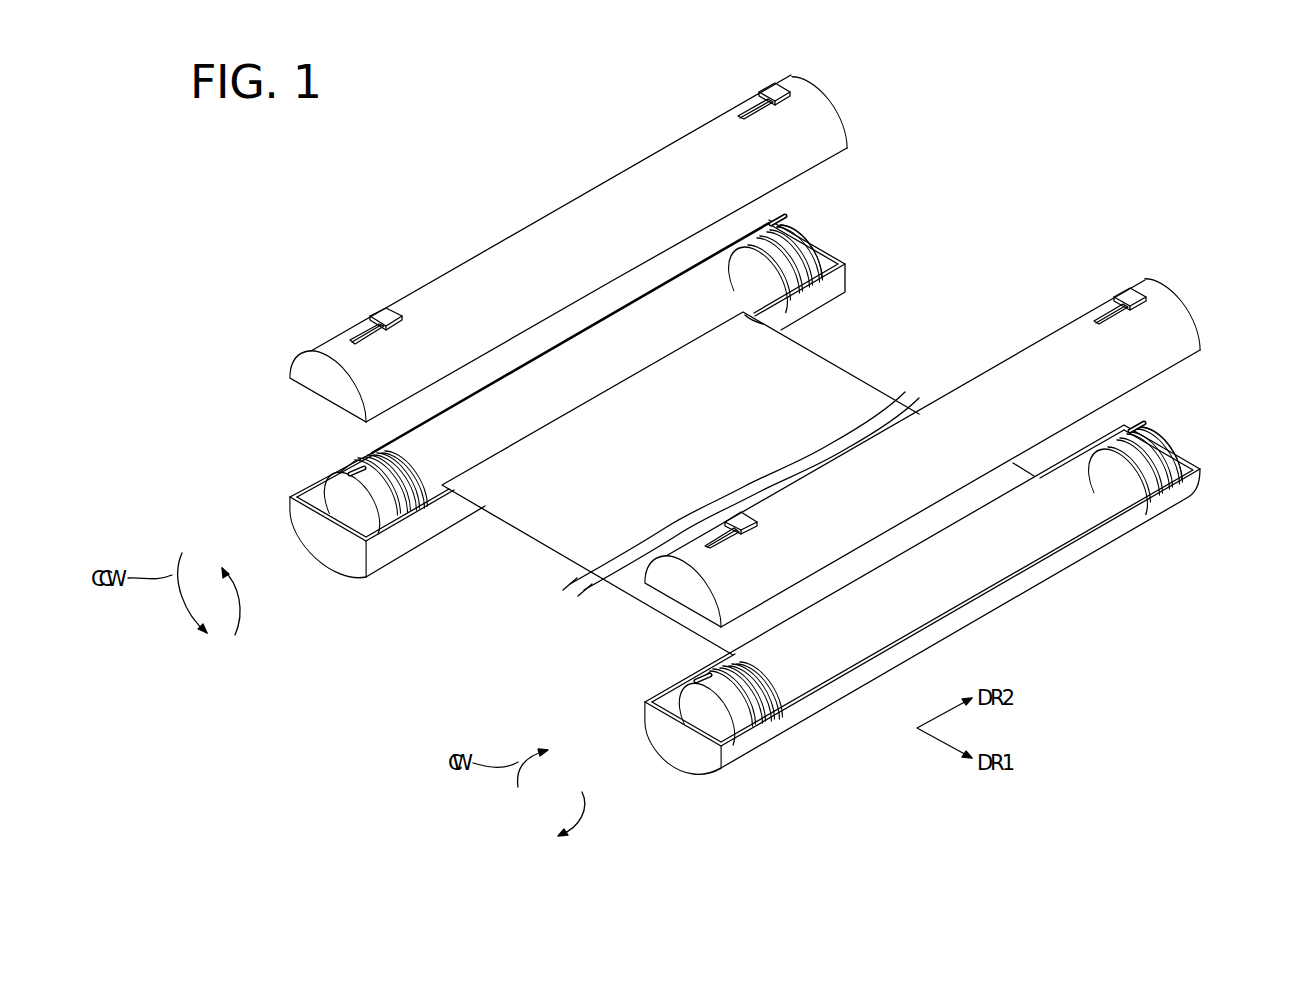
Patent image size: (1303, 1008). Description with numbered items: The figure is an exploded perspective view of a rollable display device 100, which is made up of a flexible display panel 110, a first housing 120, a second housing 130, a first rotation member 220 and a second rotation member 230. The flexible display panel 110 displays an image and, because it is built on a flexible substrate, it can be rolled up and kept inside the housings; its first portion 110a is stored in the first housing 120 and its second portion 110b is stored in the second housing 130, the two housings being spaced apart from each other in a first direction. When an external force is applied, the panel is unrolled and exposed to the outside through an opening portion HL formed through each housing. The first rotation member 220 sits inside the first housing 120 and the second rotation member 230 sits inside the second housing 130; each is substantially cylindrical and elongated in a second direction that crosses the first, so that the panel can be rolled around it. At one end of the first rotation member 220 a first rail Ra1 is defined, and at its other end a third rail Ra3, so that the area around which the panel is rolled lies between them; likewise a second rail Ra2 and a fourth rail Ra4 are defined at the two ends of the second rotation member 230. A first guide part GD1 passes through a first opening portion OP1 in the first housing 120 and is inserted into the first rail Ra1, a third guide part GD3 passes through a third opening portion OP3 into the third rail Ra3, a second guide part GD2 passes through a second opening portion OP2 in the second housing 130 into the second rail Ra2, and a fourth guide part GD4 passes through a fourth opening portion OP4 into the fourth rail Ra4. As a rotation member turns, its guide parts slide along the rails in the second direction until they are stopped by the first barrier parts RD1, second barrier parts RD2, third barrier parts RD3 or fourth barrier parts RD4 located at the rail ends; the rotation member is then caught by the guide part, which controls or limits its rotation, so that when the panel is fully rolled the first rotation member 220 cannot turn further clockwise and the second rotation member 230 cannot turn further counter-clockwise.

The rollable display device 100 is at (1043, 143).
The flexible display panel 110 is at (738, 481).
The first portion 110a is at (865, 383).
The second portion 110b is at (912, 391).
The first housing 120 is at (534, 405).
The second housing 130 is at (890, 610).
The first rotation member 220 is at (330, 503).
The second rotation member 230 is at (686, 705).
The first rail Ra1 is at (401, 489).
The second rail Ra2 is at (732, 711).
The third rail Ra3 is at (813, 250).
The fourth rail Ra4 is at (1166, 455).
The first barrier part RD1 is at (354, 472).
The second barrier part RD2 is at (698, 679).
The third barrier part RD3 is at (782, 224).
The fourth barrier part RD4 is at (1141, 433).
The first guide part GD1 is at (378, 322).
The second guide part GD2 is at (735, 522).
The third guide part GD3 is at (786, 92).
The fourth guide part GD4 is at (1135, 297).
The first opening portion OP1 is at (353, 338).
The second opening portion OP2 is at (710, 540).
The third opening portion OP3 is at (752, 108).
The fourth opening portion OP4 is at (1108, 316).
The opening portion HL is at (766, 313).